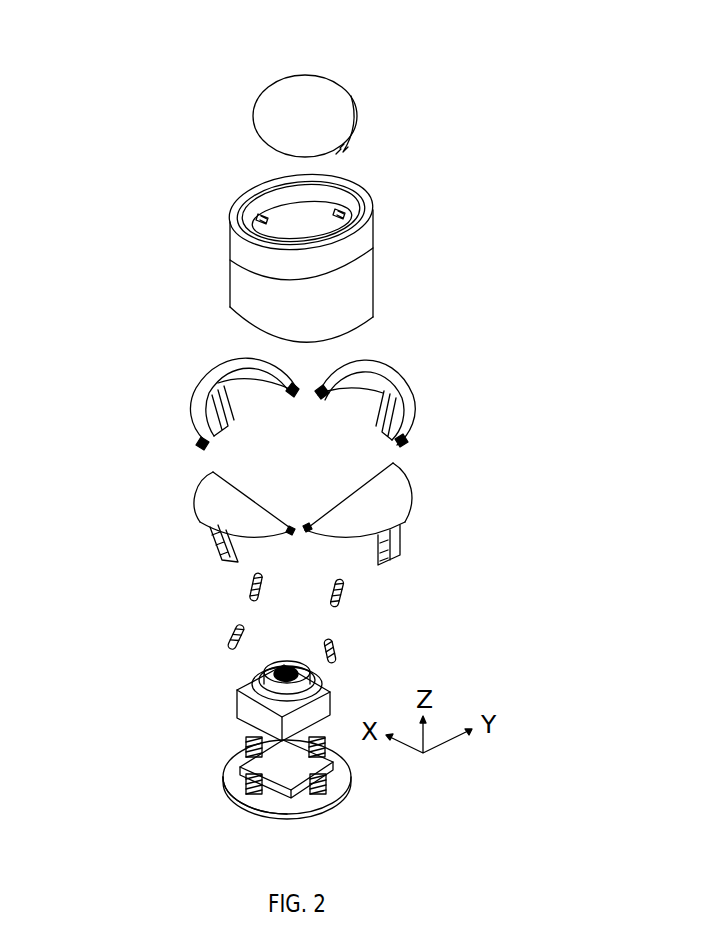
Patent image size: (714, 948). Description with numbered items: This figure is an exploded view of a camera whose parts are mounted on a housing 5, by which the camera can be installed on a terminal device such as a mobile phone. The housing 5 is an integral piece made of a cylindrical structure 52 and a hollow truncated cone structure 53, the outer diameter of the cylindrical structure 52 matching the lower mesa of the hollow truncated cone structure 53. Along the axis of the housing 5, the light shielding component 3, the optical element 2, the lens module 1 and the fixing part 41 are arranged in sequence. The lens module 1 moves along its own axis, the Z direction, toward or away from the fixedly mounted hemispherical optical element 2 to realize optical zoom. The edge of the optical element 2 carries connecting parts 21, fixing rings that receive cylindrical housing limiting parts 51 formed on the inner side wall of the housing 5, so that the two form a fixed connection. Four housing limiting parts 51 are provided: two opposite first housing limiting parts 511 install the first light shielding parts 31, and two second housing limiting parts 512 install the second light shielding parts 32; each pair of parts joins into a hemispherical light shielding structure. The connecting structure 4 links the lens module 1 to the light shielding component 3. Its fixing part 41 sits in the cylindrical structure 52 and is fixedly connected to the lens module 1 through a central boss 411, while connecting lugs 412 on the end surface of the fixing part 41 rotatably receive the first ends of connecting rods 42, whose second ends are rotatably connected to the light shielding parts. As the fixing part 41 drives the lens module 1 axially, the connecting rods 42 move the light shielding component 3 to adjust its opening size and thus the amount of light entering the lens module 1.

The lens module 1 is at (333, 690).
The optical element 2 is at (330, 100).
The connecting part 21 is at (348, 112).
The light shielding component 3 is at (371, 451).
The first light shielding part 31 is at (413, 397).
The second light shielding part 32 is at (410, 485).
The connecting structure 4 is at (238, 739).
The fixing part 41 is at (262, 784).
The boss 411 is at (298, 792).
The connecting lug 412 is at (246, 795).
The connecting rod 42 is at (227, 650).
The housing 5 is at (207, 228).
The housing limiting part 51 is at (217, 169).
The first housing limiting part 511 is at (340, 215).
The second housing limiting part 512 is at (263, 219).
The cylindrical structure 52 is at (245, 290).
The hollow truncated cone structure 53 is at (245, 248).